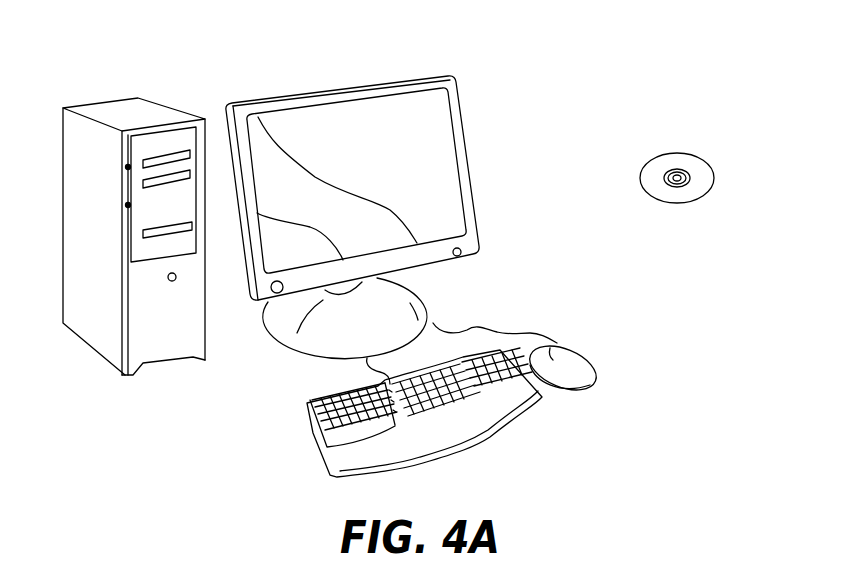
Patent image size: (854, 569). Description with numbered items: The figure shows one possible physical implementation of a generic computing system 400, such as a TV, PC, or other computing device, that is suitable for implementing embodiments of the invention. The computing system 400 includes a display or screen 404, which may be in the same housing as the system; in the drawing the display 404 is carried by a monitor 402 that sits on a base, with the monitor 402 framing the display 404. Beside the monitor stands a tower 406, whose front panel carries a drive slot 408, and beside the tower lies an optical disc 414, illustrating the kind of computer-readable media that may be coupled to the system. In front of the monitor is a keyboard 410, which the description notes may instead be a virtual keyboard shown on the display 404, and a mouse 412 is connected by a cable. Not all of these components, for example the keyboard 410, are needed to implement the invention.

The computing system 400 is at (605, 52).
The monitor 402 is at (472, 185).
The display 404 is at (425, 120).
The computer tower 406 is at (120, 108).
The optical disc drive 408 is at (185, 232).
The keyboard 410 is at (320, 448).
The mouse 412 is at (583, 358).
The optical disc 414 is at (697, 153).